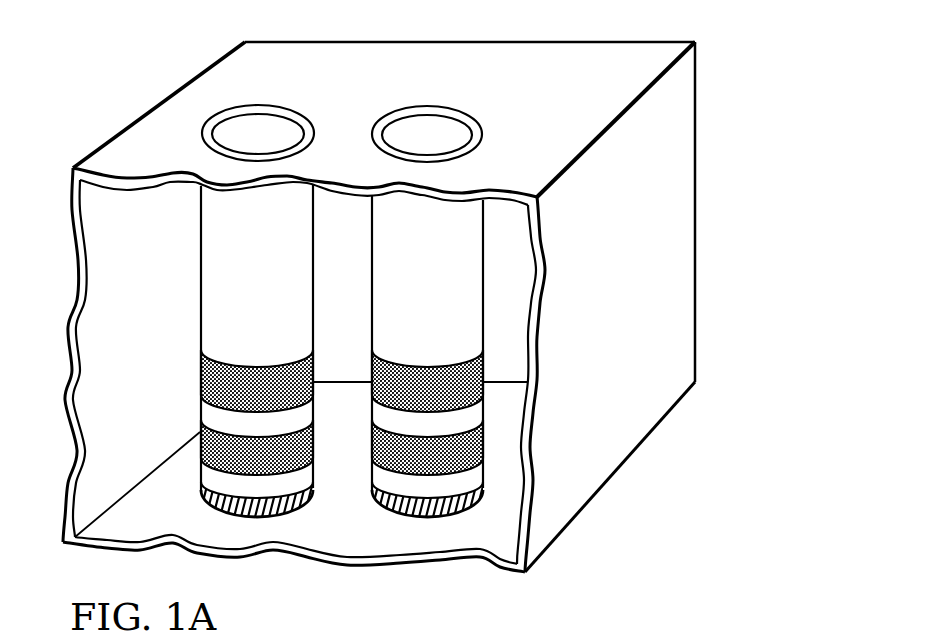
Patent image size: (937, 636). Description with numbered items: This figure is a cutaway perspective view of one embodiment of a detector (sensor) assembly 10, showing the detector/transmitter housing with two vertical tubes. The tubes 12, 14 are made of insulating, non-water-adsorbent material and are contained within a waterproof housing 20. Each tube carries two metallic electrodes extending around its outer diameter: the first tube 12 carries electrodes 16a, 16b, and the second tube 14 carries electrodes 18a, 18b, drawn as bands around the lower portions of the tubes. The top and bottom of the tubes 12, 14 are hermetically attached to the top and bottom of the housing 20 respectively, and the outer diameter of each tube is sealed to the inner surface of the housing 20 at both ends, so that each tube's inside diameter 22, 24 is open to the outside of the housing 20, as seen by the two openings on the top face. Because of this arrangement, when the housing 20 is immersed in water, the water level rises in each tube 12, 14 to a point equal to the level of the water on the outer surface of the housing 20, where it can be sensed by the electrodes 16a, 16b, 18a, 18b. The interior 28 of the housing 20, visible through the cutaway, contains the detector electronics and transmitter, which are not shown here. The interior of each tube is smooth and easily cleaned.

The detector assembly 10 is at (712, 268).
The tube 12 is at (239, 261).
The tube 14 is at (414, 261).
The metallic electrode 16a is at (213, 373).
The metallic electrode 16b is at (200, 432).
The metallic electrode 18a is at (483, 363).
The metallic electrode 18b is at (483, 438).
The waterproof housing 20 is at (613, 44).
The inside diameter 22 is at (258, 128).
The inside diameter 24 is at (429, 132).
The interior 28 is at (522, 279).